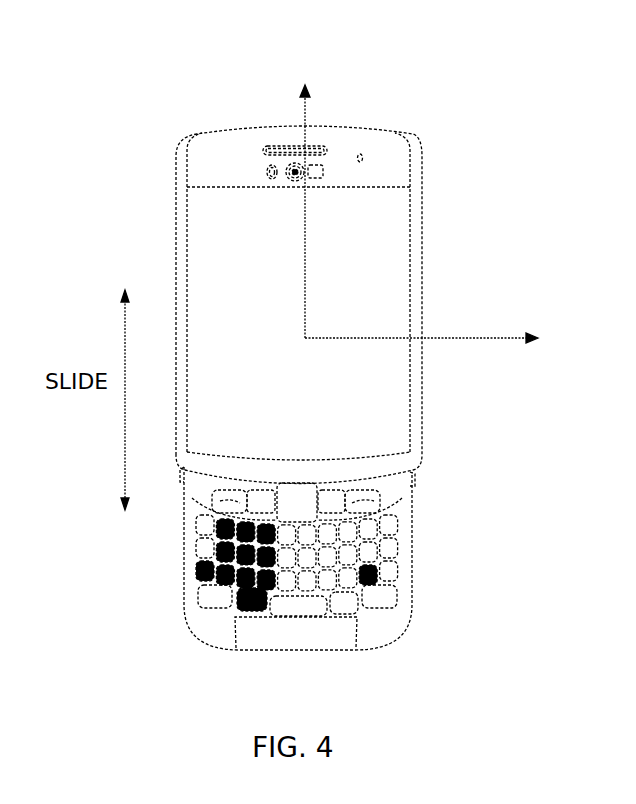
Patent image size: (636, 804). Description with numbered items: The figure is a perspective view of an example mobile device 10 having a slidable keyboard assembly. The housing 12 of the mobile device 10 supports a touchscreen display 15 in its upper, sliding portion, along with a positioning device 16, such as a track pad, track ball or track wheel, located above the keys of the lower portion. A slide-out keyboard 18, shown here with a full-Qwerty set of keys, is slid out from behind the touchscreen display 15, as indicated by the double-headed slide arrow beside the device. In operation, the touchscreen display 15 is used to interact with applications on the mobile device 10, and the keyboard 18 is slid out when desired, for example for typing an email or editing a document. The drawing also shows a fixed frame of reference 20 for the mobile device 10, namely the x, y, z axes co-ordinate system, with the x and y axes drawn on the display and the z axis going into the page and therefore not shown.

The mobile device 10 is at (488, 131).
The housing 12 is at (420, 267).
The touchscreen display 15 is at (298, 240).
The positioning device 16 is at (292, 483).
The keyboard 18 is at (383, 577).
The fixed frame of reference 20 is at (515, 338).